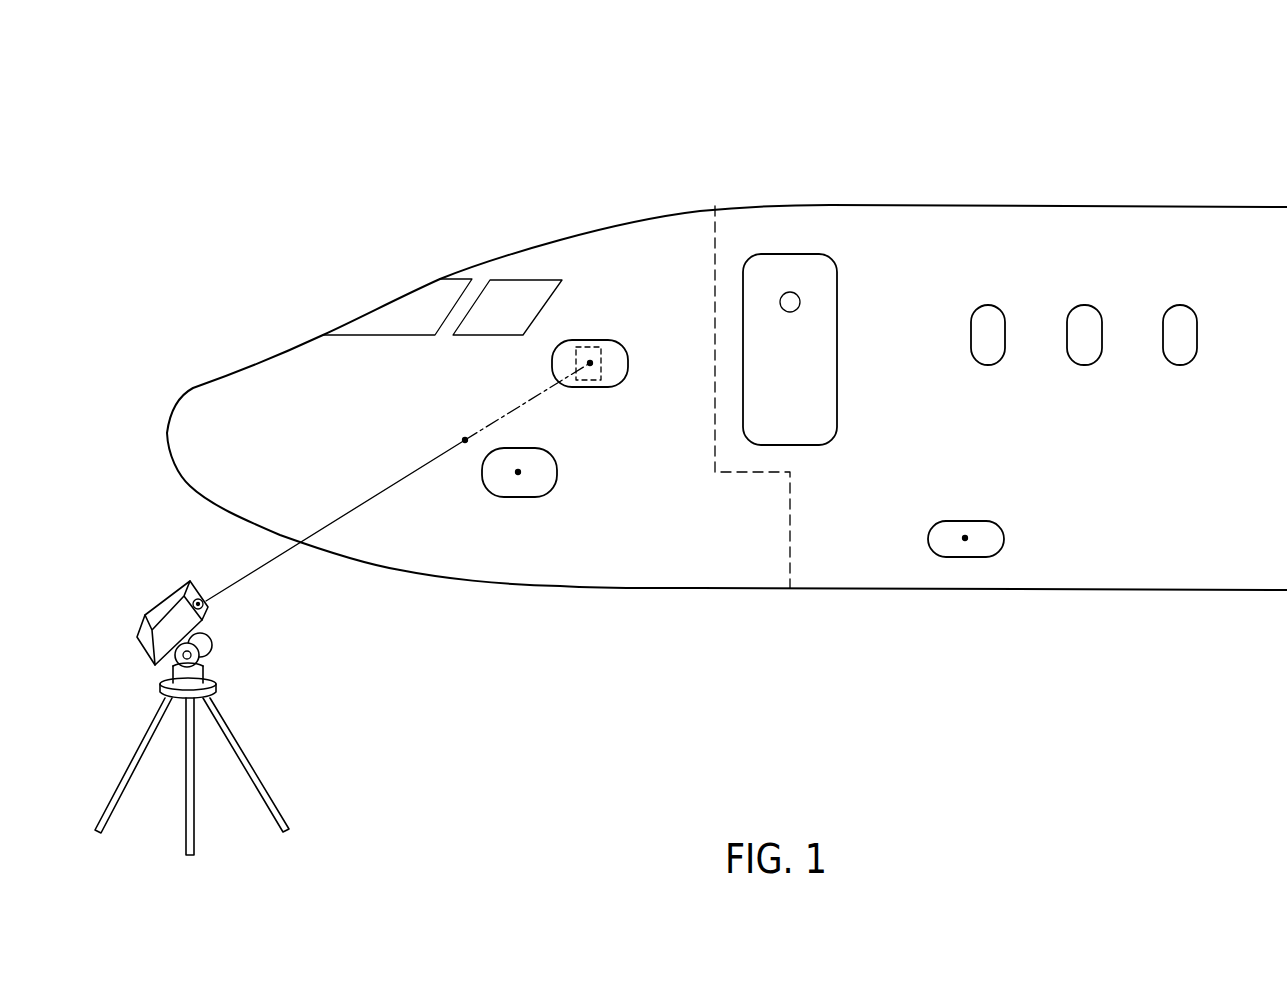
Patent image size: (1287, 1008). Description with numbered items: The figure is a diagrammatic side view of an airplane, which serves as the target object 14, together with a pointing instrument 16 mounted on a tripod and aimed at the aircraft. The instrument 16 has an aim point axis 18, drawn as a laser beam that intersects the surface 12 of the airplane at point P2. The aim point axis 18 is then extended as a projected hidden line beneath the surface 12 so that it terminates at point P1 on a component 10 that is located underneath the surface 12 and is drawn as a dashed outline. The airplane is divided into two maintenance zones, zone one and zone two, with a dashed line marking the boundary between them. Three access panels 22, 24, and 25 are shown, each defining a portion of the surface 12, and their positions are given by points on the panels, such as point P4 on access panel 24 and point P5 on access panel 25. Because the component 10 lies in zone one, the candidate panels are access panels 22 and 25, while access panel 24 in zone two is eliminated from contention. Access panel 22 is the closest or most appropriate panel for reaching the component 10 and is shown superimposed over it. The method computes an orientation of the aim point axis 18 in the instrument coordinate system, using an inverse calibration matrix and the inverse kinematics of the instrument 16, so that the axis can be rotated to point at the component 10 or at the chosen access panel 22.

The component 10 is at (592, 345).
The surface 12 is at (238, 370).
The target object 14 is at (955, 127).
The pointing instrument 16 is at (287, 667).
The aim point axis 18 is at (393, 487).
The access panel 22 is at (595, 388).
The access panel 24 is at (1004, 540).
The access panel 25 is at (515, 499).
The point P1 is at (593, 364).
The point P2 is at (465, 438).
The point P4 is at (965, 536).
The point P5 is at (520, 472).